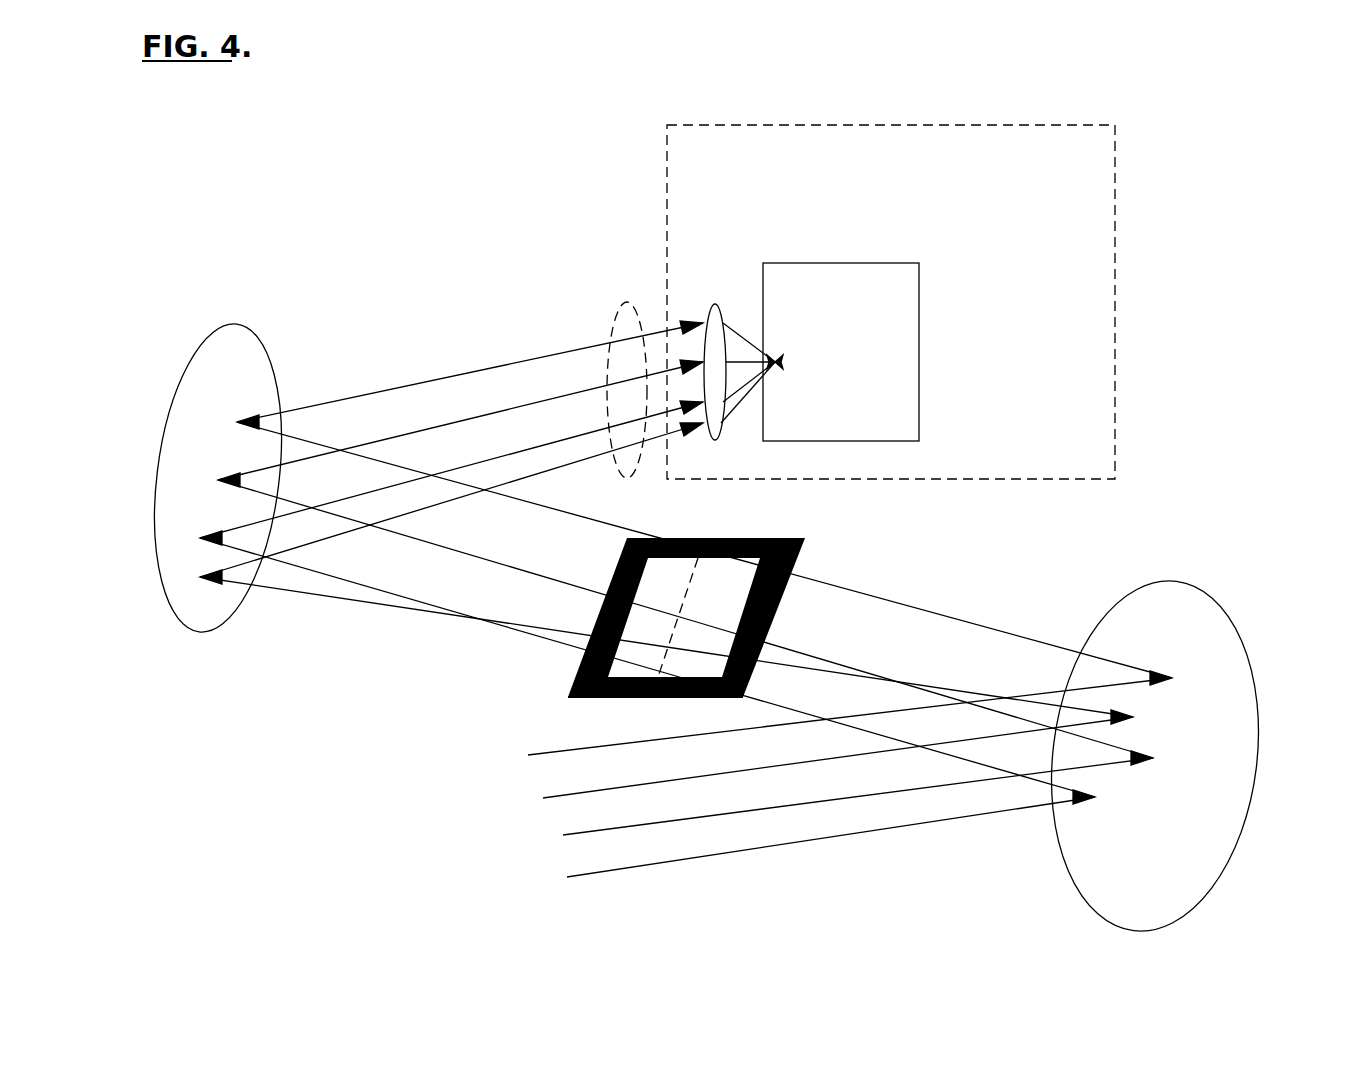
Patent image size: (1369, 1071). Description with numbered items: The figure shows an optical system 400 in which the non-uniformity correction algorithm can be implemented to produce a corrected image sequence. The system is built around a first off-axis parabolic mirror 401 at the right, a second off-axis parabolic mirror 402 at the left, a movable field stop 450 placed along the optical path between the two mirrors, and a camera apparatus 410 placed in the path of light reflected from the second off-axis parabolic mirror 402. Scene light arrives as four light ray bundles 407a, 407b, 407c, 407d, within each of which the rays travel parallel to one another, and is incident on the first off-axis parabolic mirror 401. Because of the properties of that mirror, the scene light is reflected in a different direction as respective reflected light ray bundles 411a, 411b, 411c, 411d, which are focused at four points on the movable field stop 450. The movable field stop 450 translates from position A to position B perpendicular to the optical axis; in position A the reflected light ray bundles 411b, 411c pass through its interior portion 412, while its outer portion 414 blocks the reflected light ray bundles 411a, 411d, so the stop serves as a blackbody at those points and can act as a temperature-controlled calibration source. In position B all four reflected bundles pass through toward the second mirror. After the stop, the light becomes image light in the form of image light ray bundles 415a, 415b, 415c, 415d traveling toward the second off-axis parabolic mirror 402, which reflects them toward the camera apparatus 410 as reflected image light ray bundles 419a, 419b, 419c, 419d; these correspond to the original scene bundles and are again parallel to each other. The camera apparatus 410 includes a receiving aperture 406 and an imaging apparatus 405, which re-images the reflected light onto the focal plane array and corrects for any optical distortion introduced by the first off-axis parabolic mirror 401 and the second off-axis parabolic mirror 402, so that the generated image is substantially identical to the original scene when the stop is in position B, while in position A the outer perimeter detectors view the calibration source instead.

The optical system 400 is at (1272, 300).
The first off-axis parabolic mirror 401 is at (1176, 581).
The second off-axis parabolic mirror 402 is at (245, 323).
The imaging apparatus 405 is at (850, 263).
The receiving aperture 406 is at (715, 303).
The light ray bundle 407a is at (567, 877).
The light ray bundle 407b is at (563, 835).
The light ray bundle 407c is at (543, 798).
The light ray bundle 407d is at (528, 755).
The camera apparatus 410 is at (1115, 125).
The reflected light ray bundle 411a is at (768, 706).
The reflected light ray bundle 411b is at (783, 652).
The reflected light ray bundle 411c is at (963, 690).
The reflected light ray bundle 411d is at (913, 606).
The interior portion 412 is at (705, 500).
The outer portion 414 is at (608, 697).
The image light ray bundle 415a is at (530, 633).
The image light ray bundle 415b is at (526, 571).
The image light ray bundle 415c is at (307, 595).
The image light ray bundle 415d is at (538, 506).
The reflected image light ray bundle 419a is at (462, 466).
The reflected image light ray bundle 419b is at (415, 432).
The reflected image light ray bundle 419c is at (507, 484).
The reflected image light ray bundle 419d is at (405, 384).
The movable field stop 450 is at (805, 538).